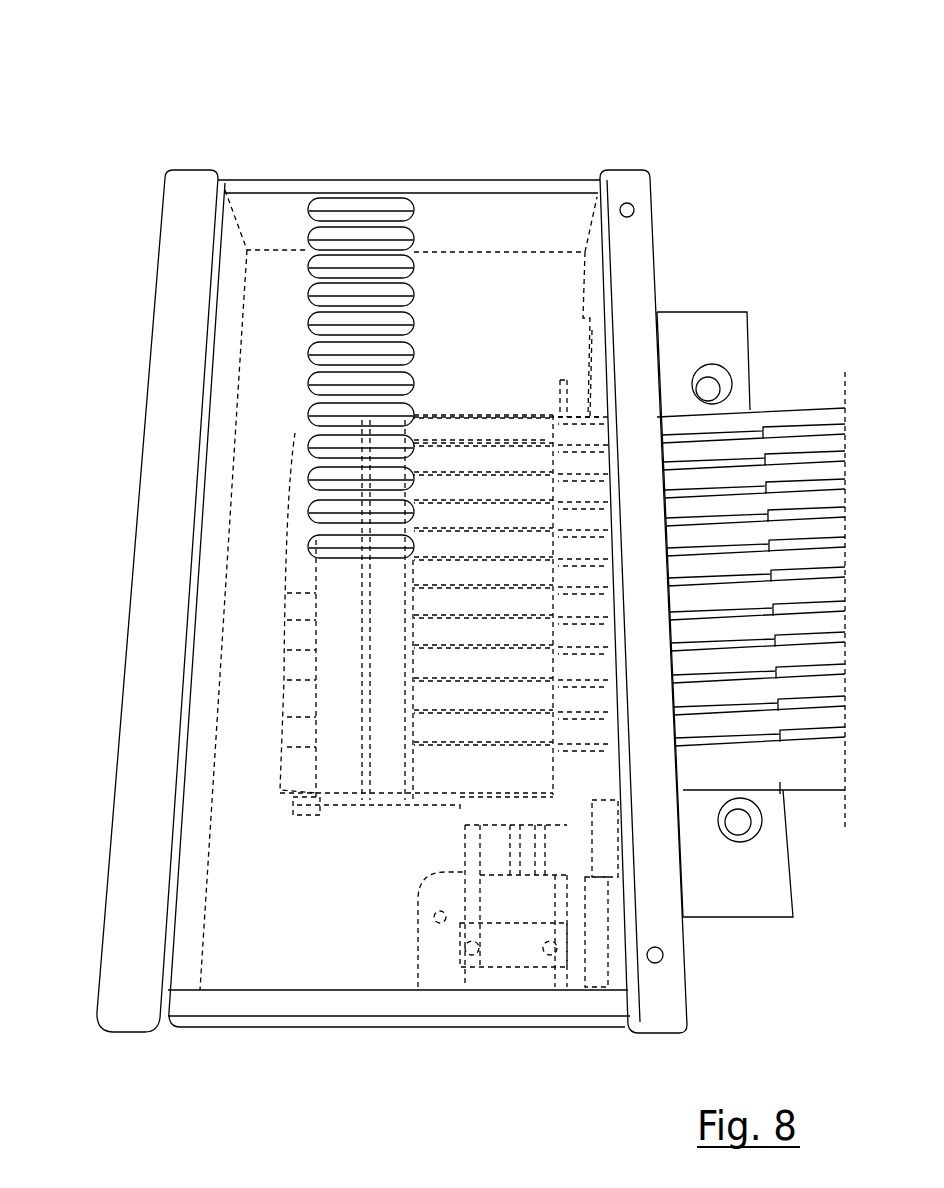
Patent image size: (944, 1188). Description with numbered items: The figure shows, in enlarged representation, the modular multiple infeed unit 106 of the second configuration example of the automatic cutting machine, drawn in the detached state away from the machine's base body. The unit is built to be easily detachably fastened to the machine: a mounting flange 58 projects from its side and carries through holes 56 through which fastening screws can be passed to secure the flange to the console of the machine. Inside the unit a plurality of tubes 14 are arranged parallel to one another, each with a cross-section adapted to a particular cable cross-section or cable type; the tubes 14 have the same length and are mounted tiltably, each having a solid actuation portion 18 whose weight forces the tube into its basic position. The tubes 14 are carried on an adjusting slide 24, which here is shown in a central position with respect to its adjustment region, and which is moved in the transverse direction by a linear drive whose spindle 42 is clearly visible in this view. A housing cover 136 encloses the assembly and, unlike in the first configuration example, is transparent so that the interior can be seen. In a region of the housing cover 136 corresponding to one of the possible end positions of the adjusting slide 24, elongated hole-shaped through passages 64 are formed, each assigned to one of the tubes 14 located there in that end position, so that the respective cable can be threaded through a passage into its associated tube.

The modular multiple infeed unit 106 is at (226, 112).
The housing cover 136 is at (503, 203).
The through passages 64 is at (342, 168).
The actuation portion 18 is at (345, 780).
The adjusting slide 24 is at (493, 848).
The spindle 42 is at (510, 912).
The mounting flange 58 is at (683, 337).
The through holes 56 is at (718, 390).
The tubes 14 is at (800, 385).